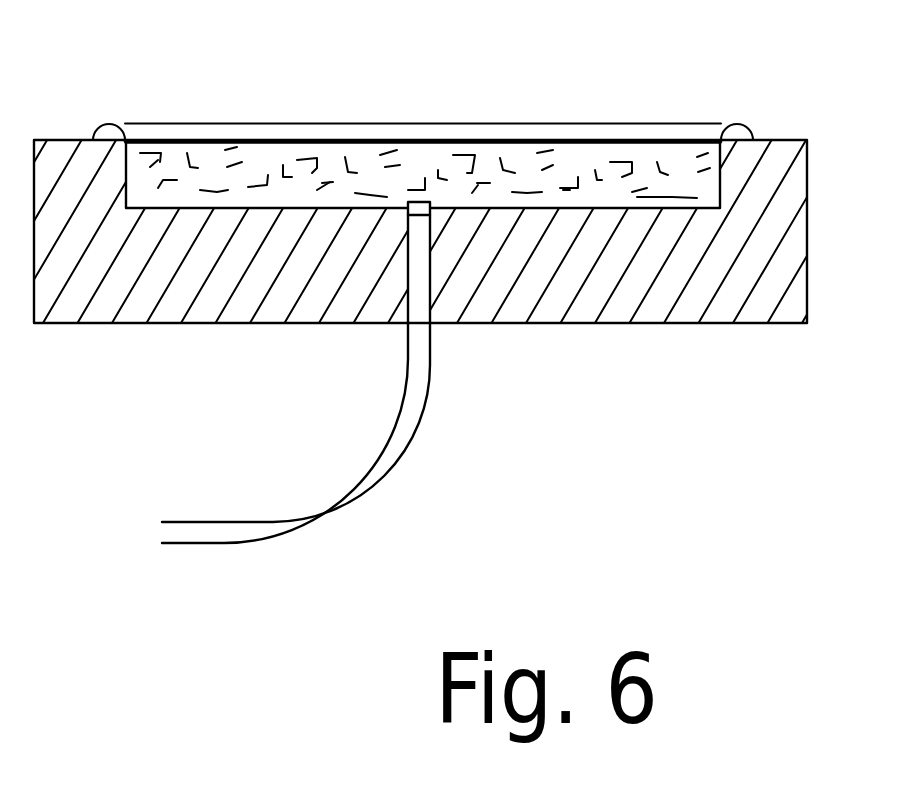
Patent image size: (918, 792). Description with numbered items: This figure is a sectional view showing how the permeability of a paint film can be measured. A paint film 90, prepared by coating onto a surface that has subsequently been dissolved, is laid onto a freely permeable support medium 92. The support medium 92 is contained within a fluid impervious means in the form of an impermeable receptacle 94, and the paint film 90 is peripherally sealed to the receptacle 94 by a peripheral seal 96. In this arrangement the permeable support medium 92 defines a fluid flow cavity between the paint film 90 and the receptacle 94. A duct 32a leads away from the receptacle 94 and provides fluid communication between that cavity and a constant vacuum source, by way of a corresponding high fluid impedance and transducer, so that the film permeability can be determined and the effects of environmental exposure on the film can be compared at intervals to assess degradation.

The impermeable receptacle 94 is at (283, 280).
The freely permeable support medium 92 is at (595, 192).
The paint film 90 is at (582, 140).
The peripheral seal 96 is at (112, 130).
The duct 32a is at (372, 495).